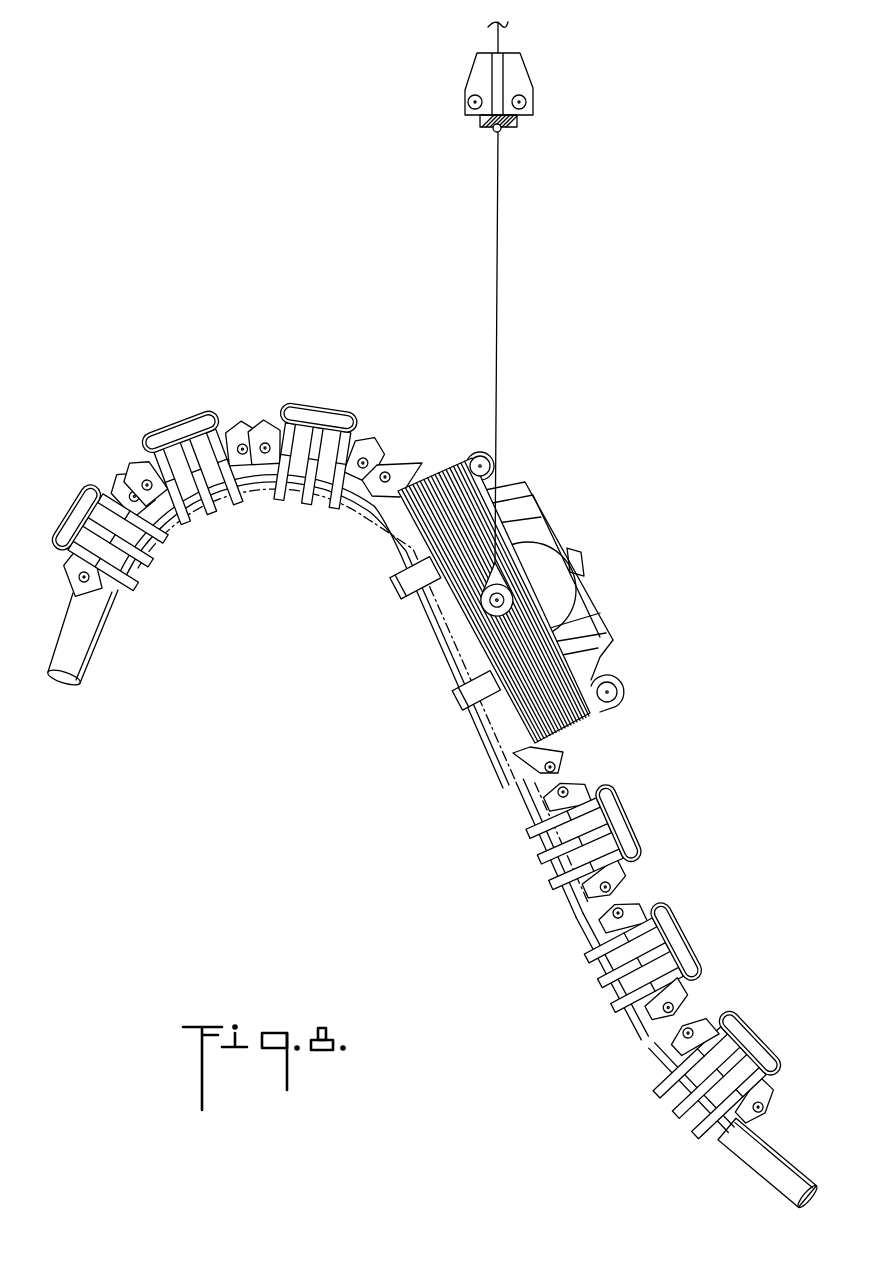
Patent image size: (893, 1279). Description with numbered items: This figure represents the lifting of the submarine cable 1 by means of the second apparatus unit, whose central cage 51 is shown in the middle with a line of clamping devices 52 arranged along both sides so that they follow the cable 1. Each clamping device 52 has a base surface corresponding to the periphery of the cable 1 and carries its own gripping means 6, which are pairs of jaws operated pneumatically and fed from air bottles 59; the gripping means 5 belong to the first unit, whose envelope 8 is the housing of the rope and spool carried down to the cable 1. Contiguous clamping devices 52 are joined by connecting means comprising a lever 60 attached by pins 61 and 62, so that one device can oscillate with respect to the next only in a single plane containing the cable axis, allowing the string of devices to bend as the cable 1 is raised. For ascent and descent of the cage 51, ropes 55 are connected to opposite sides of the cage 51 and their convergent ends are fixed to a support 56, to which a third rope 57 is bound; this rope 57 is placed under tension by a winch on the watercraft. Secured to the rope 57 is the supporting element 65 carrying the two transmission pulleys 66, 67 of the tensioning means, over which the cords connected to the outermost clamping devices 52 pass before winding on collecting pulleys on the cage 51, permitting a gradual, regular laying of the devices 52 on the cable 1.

The submarine cable 1 is at (97, 651).
The gripping means 5 is at (398, 598).
The gripping means 6 is at (543, 880).
The envelope 8 is at (532, 505).
The central cage 51 is at (588, 721).
The clamping devices 52 is at (298, 438).
The ropes 55 is at (513, 243).
The support 56 is at (481, 125).
The third rope 57 is at (497, 31).
The air bottles 59 is at (343, 420).
The lever 60 is at (676, 1024).
The pin 61 is at (683, 1005).
The pin 62 is at (686, 1039).
The supporting element 65 is at (517, 70).
The transmission pulley 66 is at (531, 106).
The transmission pulley 67 is at (466, 104).